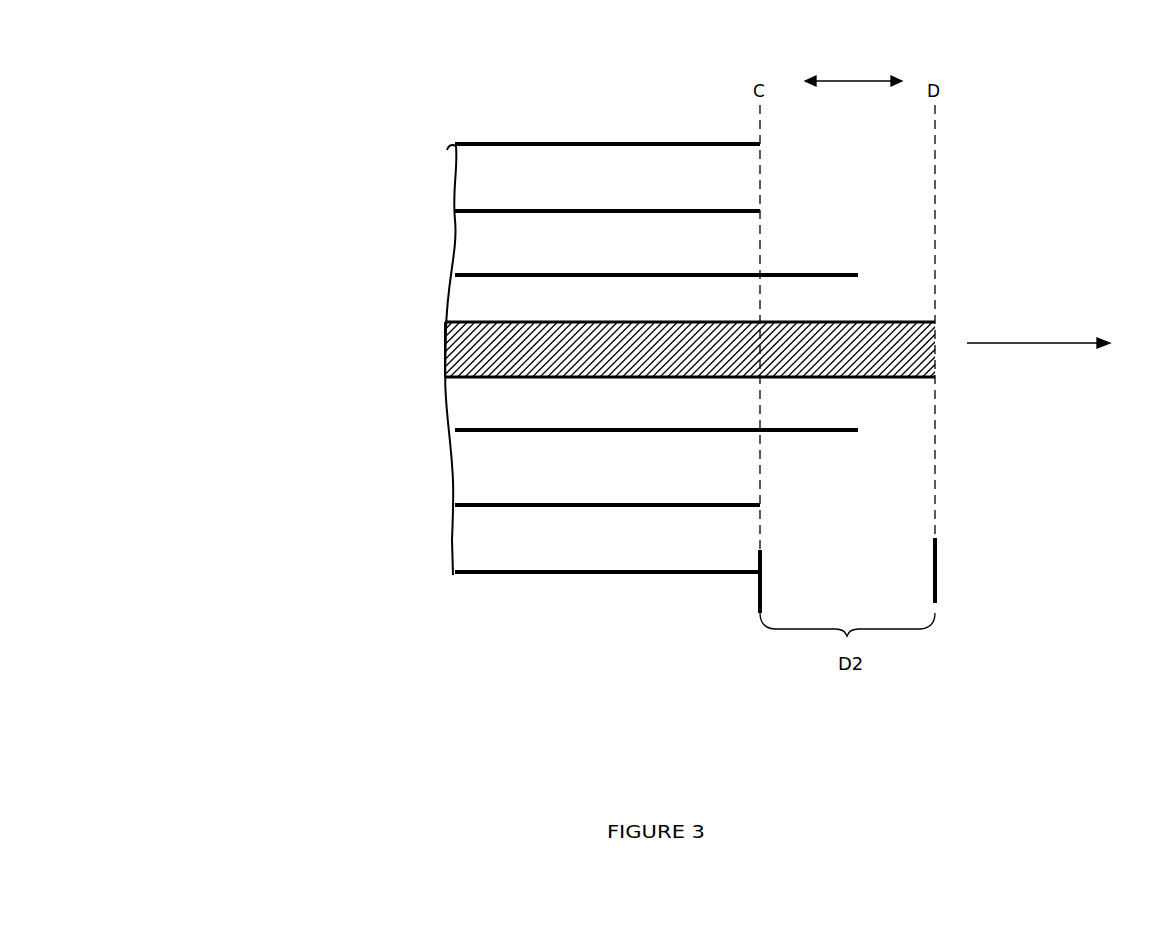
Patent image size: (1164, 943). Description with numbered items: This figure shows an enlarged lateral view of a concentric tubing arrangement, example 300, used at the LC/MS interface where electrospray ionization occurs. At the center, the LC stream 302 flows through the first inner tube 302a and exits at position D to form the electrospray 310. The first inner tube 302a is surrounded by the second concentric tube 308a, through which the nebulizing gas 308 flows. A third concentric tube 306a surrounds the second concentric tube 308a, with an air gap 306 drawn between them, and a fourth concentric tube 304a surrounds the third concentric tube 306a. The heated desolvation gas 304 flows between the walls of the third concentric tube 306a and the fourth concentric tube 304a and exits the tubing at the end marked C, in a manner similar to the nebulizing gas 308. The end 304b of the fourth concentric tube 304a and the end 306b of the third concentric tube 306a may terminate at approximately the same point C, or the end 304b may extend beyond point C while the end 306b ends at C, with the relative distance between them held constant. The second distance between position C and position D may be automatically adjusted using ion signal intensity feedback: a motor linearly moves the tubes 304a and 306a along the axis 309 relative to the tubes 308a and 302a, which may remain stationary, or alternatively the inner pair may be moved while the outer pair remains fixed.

The example tubing arrangement 300 is at (192, 50).
The LC stream 302 is at (477, 350).
The first inner tube 302a is at (752, 321).
The heated desolvation gas 304 is at (607, 358).
The fourth concentric tube 304a is at (672, 143).
The end of fourth concentric tube 304b is at (760, 145).
The air gap 306 is at (607, 358).
The third concentric tube 306a is at (717, 212).
The end of third concentric tube 306b is at (760, 212).
The nebulizing gas 308 is at (656, 352).
The second concentric tube 308a is at (726, 274).
The adjustment axis 309 is at (873, 80).
The electrospray 310 is at (1047, 353).